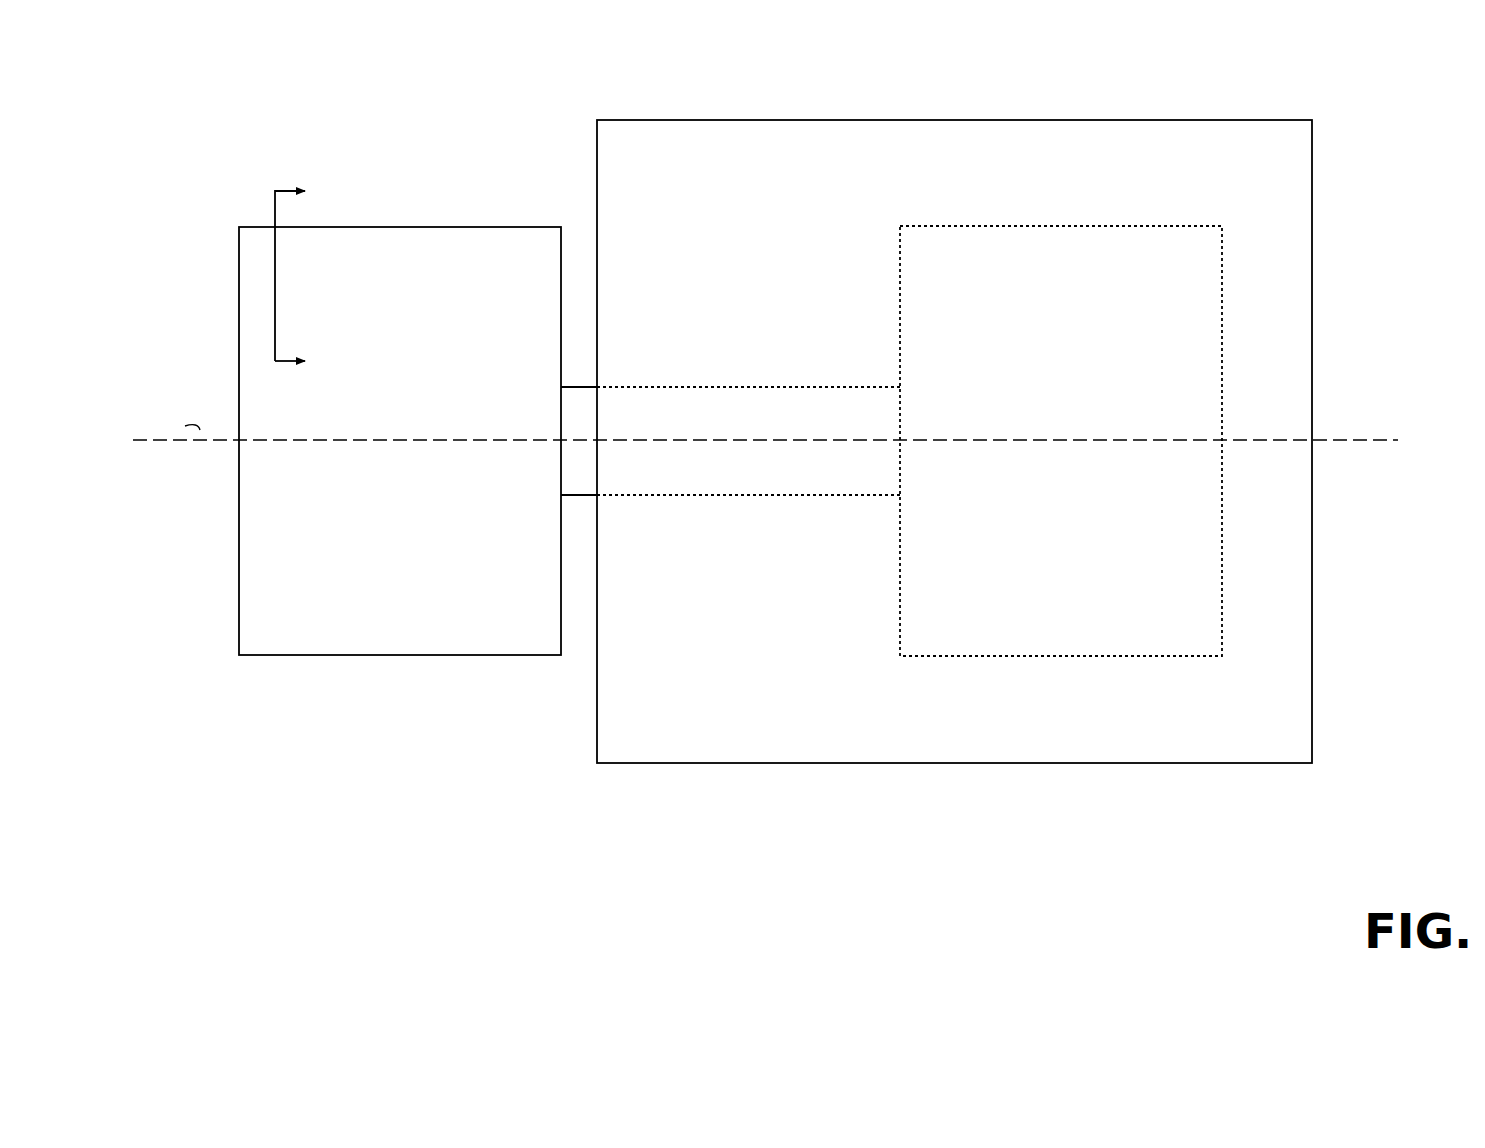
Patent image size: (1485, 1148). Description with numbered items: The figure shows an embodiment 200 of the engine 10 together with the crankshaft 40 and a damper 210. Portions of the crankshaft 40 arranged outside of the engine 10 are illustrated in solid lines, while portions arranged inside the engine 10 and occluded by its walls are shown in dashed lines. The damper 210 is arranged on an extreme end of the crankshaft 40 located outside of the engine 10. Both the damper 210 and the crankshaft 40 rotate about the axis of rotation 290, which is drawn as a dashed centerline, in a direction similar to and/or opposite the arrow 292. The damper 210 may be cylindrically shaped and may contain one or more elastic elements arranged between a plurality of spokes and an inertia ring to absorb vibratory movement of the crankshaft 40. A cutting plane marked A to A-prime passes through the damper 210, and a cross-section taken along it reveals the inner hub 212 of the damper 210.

The embodiment 200 is at (1349, 80).
The engine 10 is at (866, 119).
The crankshaft 40 is at (980, 657).
The damper 210 is at (507, 657).
The inner hub 212 is at (220, 325).
The axis of rotation 290 is at (158, 438).
The arrow 292 is at (196, 456).